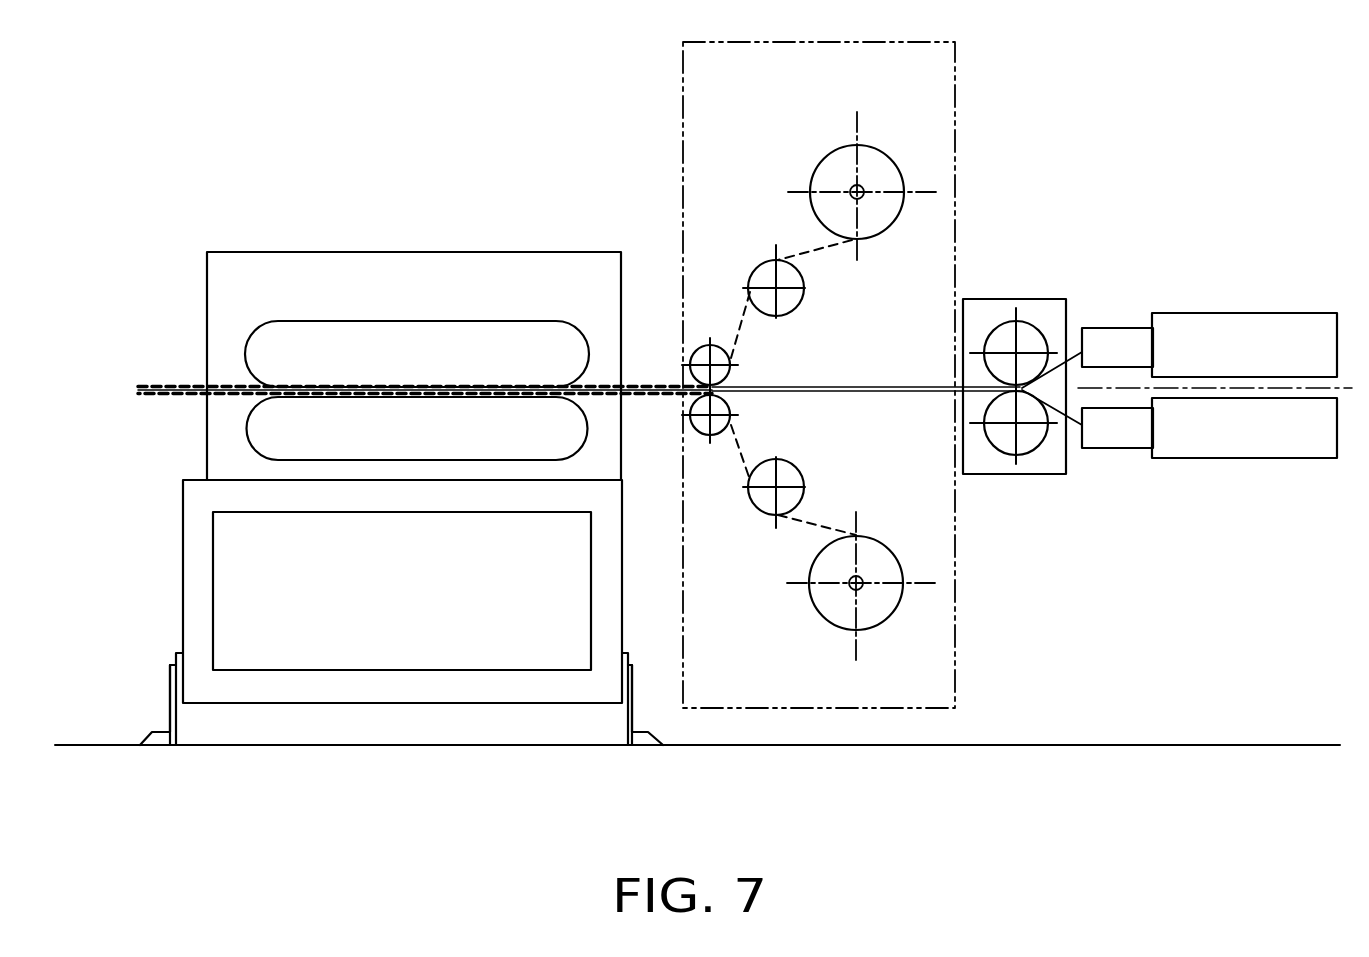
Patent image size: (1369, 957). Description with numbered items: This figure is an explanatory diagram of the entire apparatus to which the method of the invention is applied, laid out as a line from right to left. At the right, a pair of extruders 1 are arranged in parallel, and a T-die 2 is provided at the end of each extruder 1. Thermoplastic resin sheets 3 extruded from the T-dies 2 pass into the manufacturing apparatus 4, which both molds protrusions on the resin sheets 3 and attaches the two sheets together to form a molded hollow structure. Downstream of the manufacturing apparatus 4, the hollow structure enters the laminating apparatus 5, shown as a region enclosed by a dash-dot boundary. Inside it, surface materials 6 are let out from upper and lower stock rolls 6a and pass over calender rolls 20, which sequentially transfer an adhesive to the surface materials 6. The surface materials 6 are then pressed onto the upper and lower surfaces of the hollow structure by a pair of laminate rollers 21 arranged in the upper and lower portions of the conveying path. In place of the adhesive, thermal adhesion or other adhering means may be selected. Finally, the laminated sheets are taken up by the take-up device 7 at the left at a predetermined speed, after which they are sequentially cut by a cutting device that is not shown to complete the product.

The extruder 1 is at (1243, 330).
The T-die 2 is at (1117, 338).
The thermoplastic resin sheet 3 is at (1075, 306).
The manufacturing apparatus 4 is at (1014, 300).
The laminating apparatus 5 is at (957, 192).
The surface material 6 is at (652, 380).
The stock roll 6a is at (891, 157).
The take-up device 7 is at (413, 278).
The calender roll 20 is at (806, 294).
The laminate roller 21 is at (709, 340).